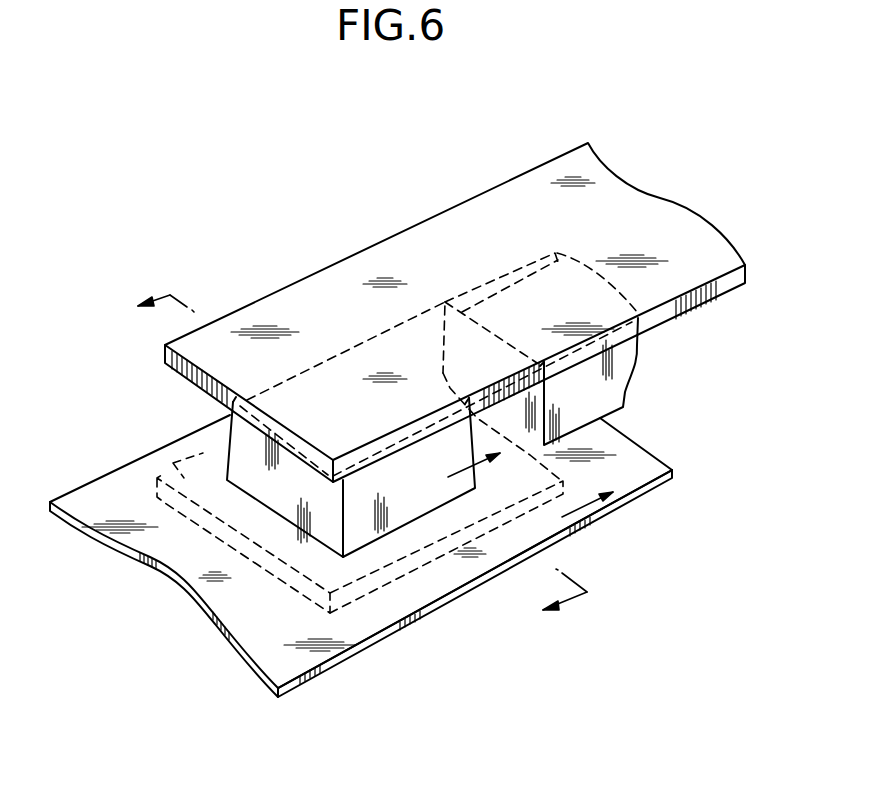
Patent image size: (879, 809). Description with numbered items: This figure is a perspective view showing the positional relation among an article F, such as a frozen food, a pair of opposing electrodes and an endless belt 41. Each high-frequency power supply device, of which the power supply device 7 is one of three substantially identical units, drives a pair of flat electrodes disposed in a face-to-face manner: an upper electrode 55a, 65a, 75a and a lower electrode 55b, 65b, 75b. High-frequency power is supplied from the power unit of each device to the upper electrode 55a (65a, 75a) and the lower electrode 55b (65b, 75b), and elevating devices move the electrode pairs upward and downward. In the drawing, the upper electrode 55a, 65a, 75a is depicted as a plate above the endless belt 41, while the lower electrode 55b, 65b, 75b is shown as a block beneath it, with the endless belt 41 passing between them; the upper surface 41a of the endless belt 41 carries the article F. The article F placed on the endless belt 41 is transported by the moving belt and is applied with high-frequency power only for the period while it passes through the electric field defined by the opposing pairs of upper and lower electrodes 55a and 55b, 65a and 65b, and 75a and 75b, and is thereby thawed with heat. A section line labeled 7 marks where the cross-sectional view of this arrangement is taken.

The high-frequency power supply device 7 is at (346, 463).
The endless belt 41 is at (636, 465).
The base plate front edge / surface 41a is at (440, 610).
The upper electrode 55a is at (418, 263).
The upper electrode 65a is at (541, 262).
The upper electrode 75a is at (527, 347).
The lower electrode 55b is at (162, 452).
The lower electrode 65b is at (126, 437).
The lower electrode 75b is at (74, 441).
The article F is at (236, 461).